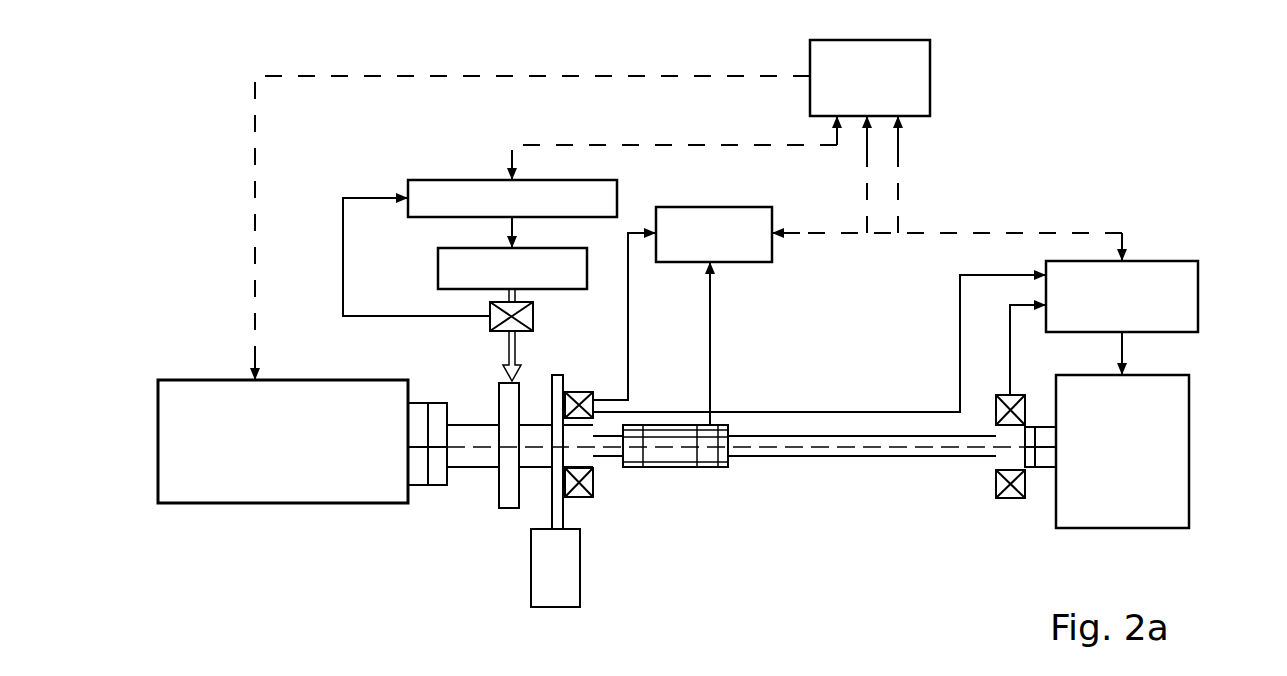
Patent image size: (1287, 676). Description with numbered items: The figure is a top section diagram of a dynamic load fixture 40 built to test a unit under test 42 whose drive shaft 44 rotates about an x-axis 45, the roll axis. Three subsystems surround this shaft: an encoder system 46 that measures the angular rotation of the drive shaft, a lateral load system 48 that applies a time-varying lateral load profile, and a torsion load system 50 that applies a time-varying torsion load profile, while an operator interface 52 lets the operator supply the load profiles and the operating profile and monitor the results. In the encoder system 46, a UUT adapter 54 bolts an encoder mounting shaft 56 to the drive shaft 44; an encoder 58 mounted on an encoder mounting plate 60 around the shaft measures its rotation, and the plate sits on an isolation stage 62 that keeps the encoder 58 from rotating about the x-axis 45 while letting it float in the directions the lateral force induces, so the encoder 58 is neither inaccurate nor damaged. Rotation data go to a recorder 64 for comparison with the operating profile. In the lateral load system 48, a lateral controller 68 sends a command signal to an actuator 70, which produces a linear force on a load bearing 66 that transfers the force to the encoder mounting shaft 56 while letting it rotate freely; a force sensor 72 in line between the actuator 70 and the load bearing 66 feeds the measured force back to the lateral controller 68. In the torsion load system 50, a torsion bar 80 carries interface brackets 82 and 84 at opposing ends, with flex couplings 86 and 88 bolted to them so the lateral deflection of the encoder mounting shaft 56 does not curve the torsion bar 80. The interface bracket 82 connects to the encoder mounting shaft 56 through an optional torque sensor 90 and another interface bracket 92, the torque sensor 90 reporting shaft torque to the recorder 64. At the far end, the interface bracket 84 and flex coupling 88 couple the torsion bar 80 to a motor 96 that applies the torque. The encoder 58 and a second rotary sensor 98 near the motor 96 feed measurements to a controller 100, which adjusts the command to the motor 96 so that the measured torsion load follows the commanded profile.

The dynamic load fixture 40 is at (200, 124).
The unit under test 42 is at (187, 380).
The drive shaft 44 is at (415, 472).
The x-axis 45 is at (915, 447).
The encoder system 46 is at (474, 591).
The lateral load system 48 is at (336, 174).
The torsion load system 50 is at (1028, 182).
The operator interface 52 is at (920, 116).
The UUT adapter 54 is at (440, 478).
The encoder mounting shaft 56 is at (470, 457).
The encoder 58 is at (581, 393).
The encoder mounting plate 60 is at (565, 508).
The isolation stage 62 is at (570, 575).
The recorder 64 is at (724, 207).
The load bearing 66 is at (497, 400).
The lateral controller 68 is at (460, 178).
The actuator 70 is at (438, 268).
The force sensor 72 is at (537, 318).
The torsion bar 80 is at (832, 457).
The interface bracket 82 is at (727, 470).
The interface bracket 84 is at (1015, 457).
The flex coupling 86 is at (665, 478).
The flex coupling 88 is at (1047, 462).
The torque sensor 90 is at (705, 470).
The interface bracket 92 is at (634, 435).
The motor 96 is at (1189, 458).
The rotary sensor 98 is at (996, 403).
The controller 100 is at (1198, 275).